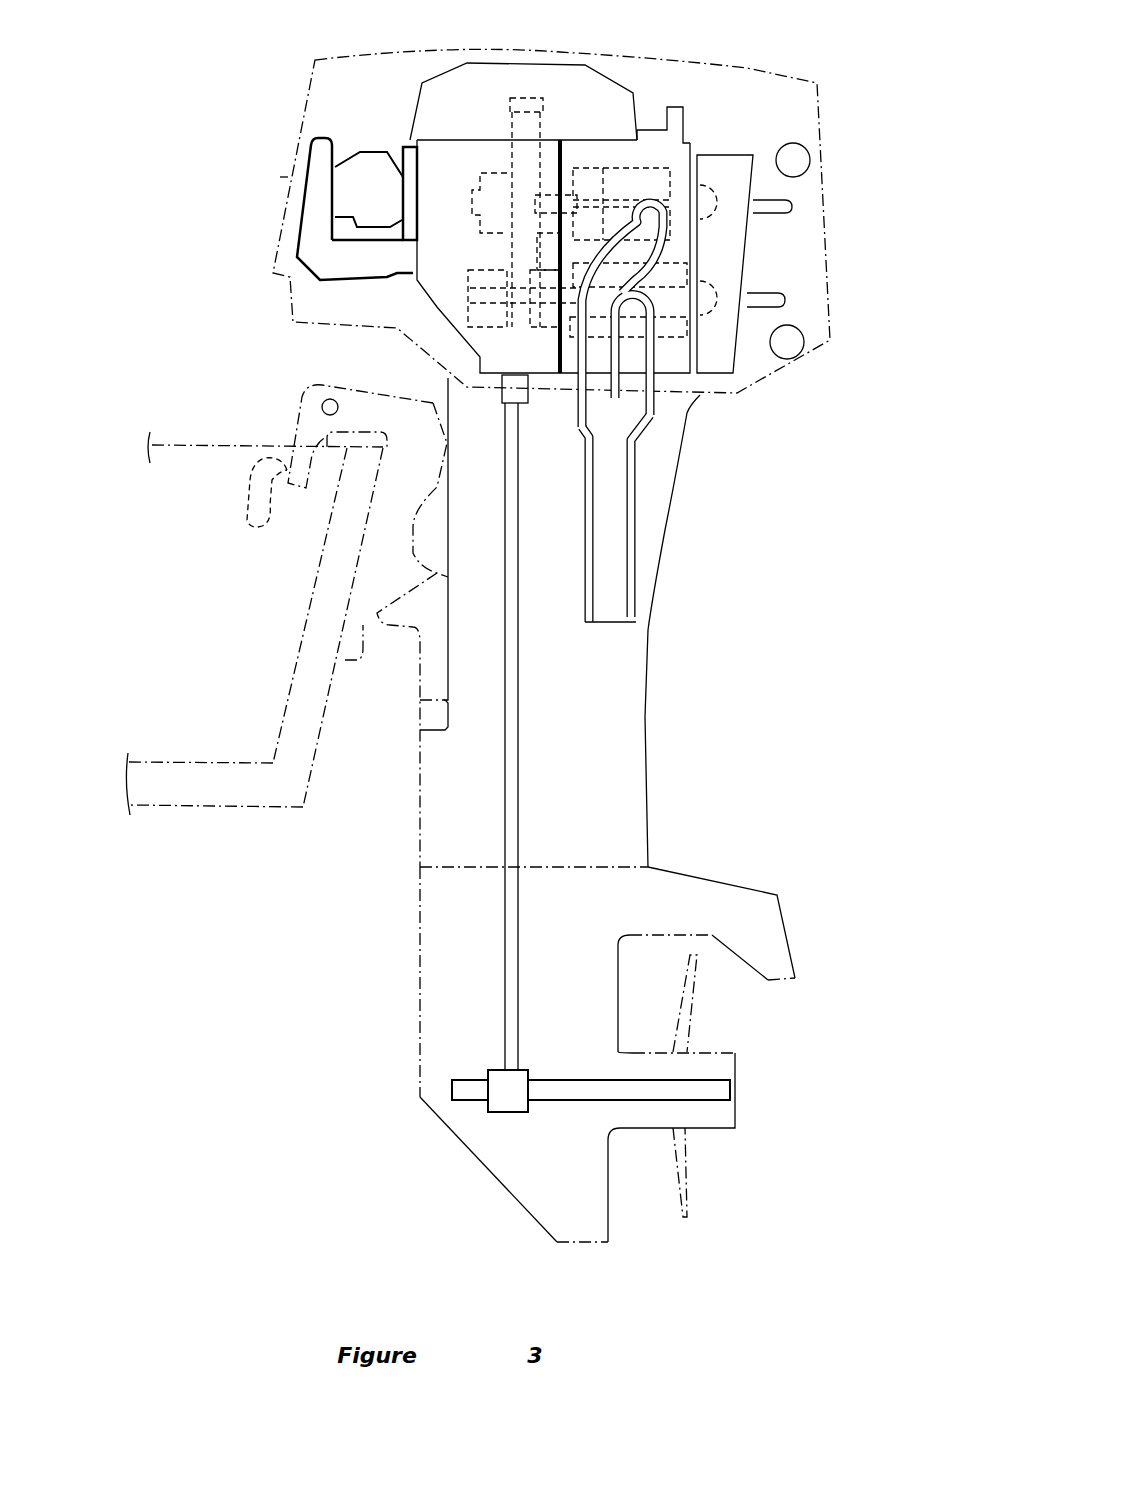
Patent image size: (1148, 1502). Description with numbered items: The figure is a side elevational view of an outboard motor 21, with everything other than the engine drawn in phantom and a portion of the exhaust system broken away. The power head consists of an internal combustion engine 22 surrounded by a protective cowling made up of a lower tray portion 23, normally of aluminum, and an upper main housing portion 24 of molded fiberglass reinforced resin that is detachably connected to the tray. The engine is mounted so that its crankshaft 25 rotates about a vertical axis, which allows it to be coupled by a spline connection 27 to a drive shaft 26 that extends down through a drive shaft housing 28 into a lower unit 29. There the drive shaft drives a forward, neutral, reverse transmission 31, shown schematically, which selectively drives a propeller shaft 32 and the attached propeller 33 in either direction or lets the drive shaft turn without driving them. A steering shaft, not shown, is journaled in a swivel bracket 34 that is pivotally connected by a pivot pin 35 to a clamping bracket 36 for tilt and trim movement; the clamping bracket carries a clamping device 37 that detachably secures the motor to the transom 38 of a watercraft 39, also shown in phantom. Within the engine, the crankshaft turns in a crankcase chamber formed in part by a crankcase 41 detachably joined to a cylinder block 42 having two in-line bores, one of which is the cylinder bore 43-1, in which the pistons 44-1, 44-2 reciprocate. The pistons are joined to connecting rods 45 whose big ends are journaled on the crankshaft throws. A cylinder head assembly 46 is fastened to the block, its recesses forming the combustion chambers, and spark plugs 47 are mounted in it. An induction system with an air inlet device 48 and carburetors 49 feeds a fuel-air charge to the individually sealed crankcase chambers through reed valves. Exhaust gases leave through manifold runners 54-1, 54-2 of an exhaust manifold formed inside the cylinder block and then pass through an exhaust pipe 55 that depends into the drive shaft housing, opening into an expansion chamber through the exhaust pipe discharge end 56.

The outboard motor 21 is at (263, 73).
The internal combustion engine 22 is at (407, 68).
The lower tray portion 23 is at (290, 313).
The upper main housing portion 24 is at (290, 182).
The crankshaft 25 is at (513, 127).
The drive shaft 26 is at (518, 937).
The spline connection 27 is at (528, 390).
The drive shaft housing 28 is at (648, 820).
The lower unit 29 is at (418, 1048).
The forward, neutral, reverse transmission 31 is at (518, 1066).
The propeller shaft 32 is at (553, 1103).
The propeller 33 is at (693, 1020).
The swivel bracket 34 is at (403, 697).
The pivot pin 35 is at (320, 405).
The clamping bracket 36 is at (363, 670).
The clamping device 37 is at (233, 513).
The transom 38 is at (308, 808).
The watercraft 39 is at (188, 418).
The crankcase 41 is at (468, 385).
The cylinder block 42 is at (650, 123).
The cylinder bore 43-1 is at (700, 180).
The piston 44-1 is at (688, 150).
The piston 44-2 is at (635, 420).
The connecting rod 45 is at (603, 197).
The cylinder head assembly 46 is at (747, 152).
The spark plug 47 is at (793, 200).
The air inlet device 48 is at (297, 247).
The carburetor 49 is at (377, 147).
The manifold runner 54-1 is at (637, 228).
The manifold runner 54-2 is at (660, 290).
The exhaust pipe 55 is at (635, 540).
The exhaust pipe discharge end 56 is at (637, 620).